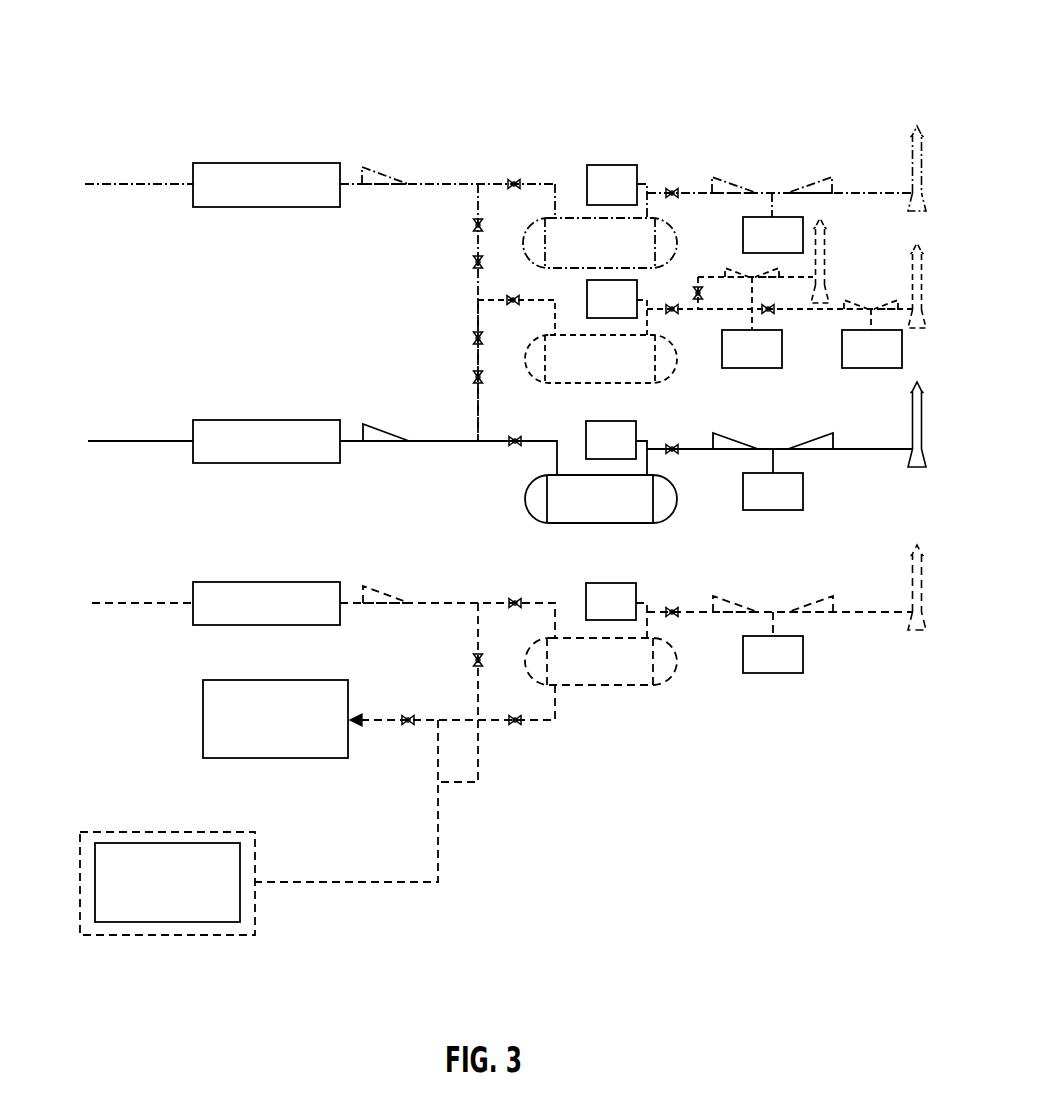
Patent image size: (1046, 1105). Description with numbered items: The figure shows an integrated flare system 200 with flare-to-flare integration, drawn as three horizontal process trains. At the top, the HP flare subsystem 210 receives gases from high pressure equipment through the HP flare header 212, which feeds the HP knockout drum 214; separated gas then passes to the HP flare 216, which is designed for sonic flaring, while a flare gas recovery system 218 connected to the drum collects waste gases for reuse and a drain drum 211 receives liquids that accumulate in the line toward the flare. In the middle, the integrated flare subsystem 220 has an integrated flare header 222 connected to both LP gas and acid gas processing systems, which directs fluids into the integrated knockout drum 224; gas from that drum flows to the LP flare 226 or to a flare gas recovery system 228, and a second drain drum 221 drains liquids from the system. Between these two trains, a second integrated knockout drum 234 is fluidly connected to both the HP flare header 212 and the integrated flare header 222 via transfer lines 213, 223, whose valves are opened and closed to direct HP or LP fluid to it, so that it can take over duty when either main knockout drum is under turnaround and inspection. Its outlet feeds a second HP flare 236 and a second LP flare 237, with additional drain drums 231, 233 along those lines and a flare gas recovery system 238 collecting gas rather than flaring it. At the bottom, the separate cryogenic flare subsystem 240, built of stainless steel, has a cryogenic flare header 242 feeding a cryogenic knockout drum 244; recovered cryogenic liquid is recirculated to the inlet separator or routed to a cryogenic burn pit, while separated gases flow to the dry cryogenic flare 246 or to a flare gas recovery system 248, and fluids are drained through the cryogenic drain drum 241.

The integrated flare system 200 is at (172, 27).
The HP flare subsystem 210 is at (147, 102).
The HP flare header 212 is at (288, 200).
The transfer line 213 is at (476, 243).
The HP knockout drum 214 is at (621, 258).
The HP flare 216 is at (911, 162).
The flare gas recovery system 218 is at (633, 201).
The drain drum 211 is at (794, 250).
The second LP flare 237 is at (827, 254).
The second HP flare 236 is at (911, 293).
The flare gas recovery system 238 is at (633, 315).
The second integrated knockout drum 234 is at (621, 374).
The drain drum 231 is at (773, 364).
The drain drum 233 is at (893, 364).
The integrated flare subsystem 220 is at (147, 373).
The integrated flare header 222 is at (288, 457).
The transfer line 223 is at (476, 360).
The integrated knockout drum 224 is at (621, 514).
The LP flare 226 is at (911, 421).
The flare gas recovery system 228 is at (632, 456).
The second drain drum 221 is at (794, 506).
The cryogenic flare subsystem 240 is at (148, 549).
The cryogenic flare header 242 is at (288, 619).
The cryogenic knockout drum 244 is at (621, 676).
The cryogenic flare 246 is at (911, 583).
The flare gas recovery system 248 is at (632, 617).
The cryogenic drain drum 241 is at (794, 669).